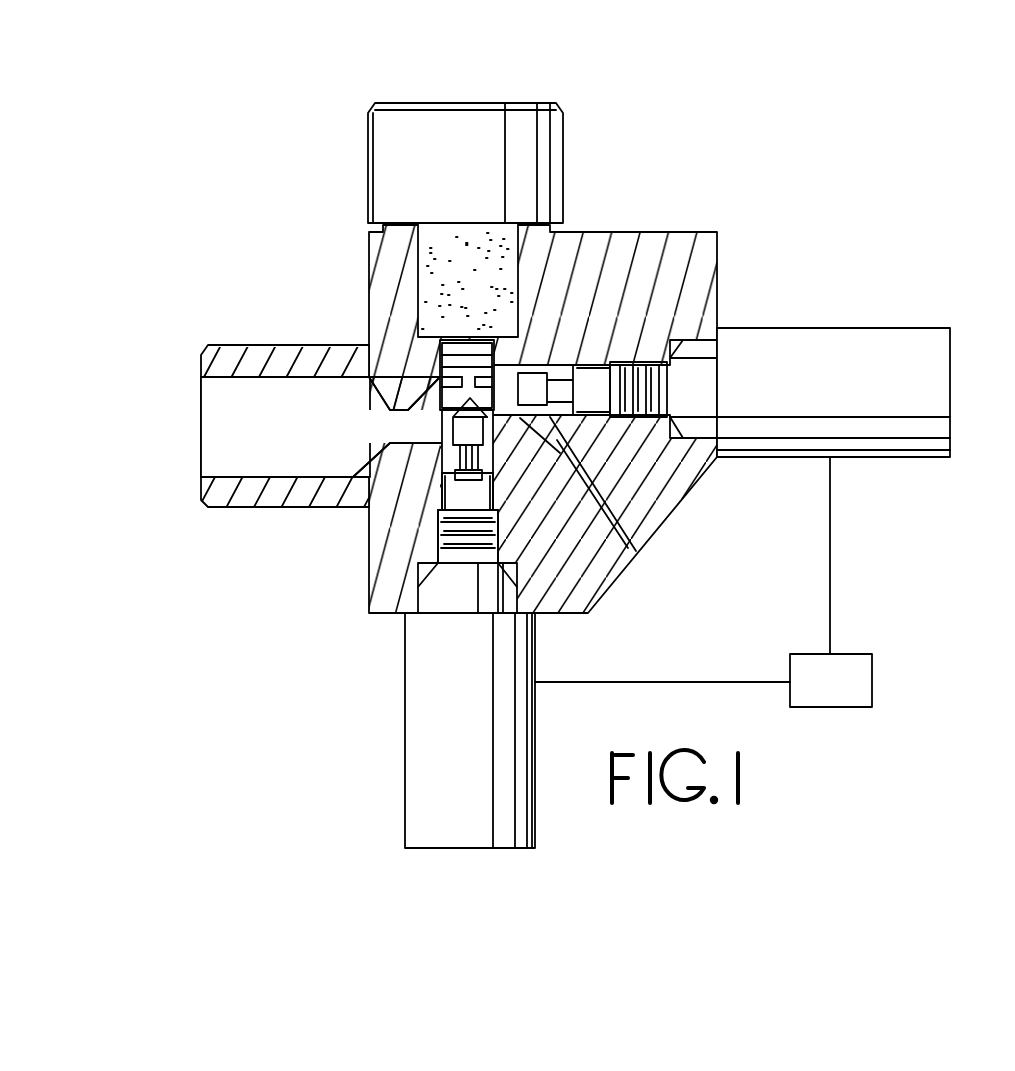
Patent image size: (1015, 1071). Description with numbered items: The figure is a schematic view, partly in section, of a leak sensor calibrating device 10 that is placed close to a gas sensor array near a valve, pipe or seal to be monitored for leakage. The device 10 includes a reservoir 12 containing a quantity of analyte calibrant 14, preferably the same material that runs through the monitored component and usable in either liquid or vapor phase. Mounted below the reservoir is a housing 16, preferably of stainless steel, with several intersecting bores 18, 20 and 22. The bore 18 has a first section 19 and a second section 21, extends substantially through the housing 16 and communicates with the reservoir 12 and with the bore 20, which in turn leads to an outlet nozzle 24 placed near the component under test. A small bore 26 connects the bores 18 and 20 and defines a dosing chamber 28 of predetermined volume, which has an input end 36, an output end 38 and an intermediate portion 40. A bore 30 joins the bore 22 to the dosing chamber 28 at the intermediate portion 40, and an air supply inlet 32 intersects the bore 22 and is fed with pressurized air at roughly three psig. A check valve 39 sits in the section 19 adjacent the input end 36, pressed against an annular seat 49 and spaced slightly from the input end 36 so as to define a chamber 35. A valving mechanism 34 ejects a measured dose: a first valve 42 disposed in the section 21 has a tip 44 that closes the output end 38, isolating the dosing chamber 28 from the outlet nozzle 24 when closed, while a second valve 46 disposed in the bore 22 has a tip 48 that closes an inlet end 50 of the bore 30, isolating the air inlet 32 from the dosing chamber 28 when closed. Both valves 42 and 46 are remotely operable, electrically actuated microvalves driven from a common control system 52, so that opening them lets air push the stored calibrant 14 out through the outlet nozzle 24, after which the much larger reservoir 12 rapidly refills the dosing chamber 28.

The leak sensor calibrating device 10 is at (247, 218).
The reservoir 12 is at (368, 168).
The analyte calibrant 14 is at (437, 265).
The housing 16 is at (623, 232).
The bore 18 is at (452, 358).
The first section of the bore 19 is at (458, 343).
The bore 20 is at (330, 482).
The second section of the bore 21 is at (438, 512).
The bore 22 is at (720, 232).
The outlet nozzle 24 is at (212, 447).
The bore 26 is at (455, 383).
The dosing chamber 28 is at (455, 405).
The bore 30 is at (518, 383).
The air supply inlet 32 is at (560, 453).
The valving mechanism 34 is at (932, 485).
The chamber 35 is at (462, 390).
The input end 36 is at (472, 335).
The output end 38 is at (372, 505).
The check valve 39 is at (462, 370).
The intermediate portion 40 is at (494, 372).
The first valve 42 is at (405, 700).
The tip 44 is at (500, 415).
The second valve 46 is at (767, 460).
The tip 48 is at (520, 430).
The annular seat 49 is at (458, 348).
The inlet end 50 is at (625, 362).
The control system 52 is at (703, 582).